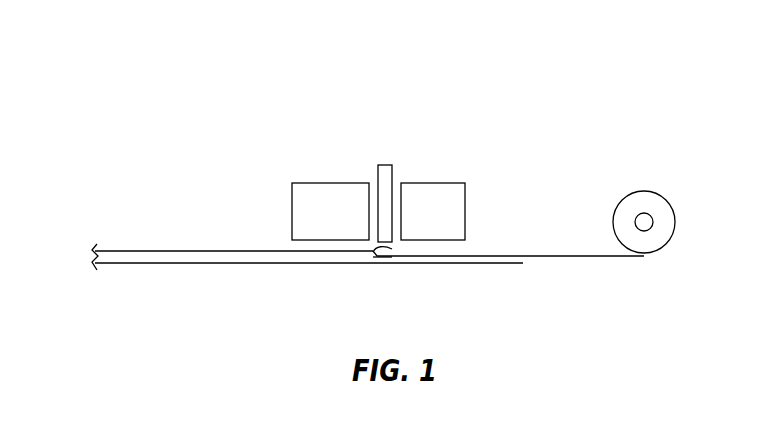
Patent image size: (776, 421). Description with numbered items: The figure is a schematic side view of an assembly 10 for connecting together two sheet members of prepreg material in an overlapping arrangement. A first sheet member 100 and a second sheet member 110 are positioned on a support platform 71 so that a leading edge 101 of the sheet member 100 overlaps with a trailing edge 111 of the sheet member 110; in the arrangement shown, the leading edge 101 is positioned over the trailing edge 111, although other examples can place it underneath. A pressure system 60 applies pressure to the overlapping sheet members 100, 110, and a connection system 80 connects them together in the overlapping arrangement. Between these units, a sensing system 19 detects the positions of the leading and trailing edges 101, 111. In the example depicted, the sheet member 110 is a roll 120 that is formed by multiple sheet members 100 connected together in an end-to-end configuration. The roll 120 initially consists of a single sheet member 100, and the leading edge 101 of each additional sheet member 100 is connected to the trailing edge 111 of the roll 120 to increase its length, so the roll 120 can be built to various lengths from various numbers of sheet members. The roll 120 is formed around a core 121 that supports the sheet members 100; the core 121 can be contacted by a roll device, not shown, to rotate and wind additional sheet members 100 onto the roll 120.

The assembly 10 is at (640, 104).
The sensing system 19 is at (385, 165).
The pressure system 60 is at (343, 223).
The connection system 80 is at (445, 223).
The support platform 71 is at (163, 263).
The sheet member 100 is at (290, 263).
The leading edge 101 is at (373, 252).
The sheet member 110 is at (533, 256).
The trailing edge 111 is at (375, 258).
The roll 120 is at (675, 223).
The core 121 is at (649, 213).